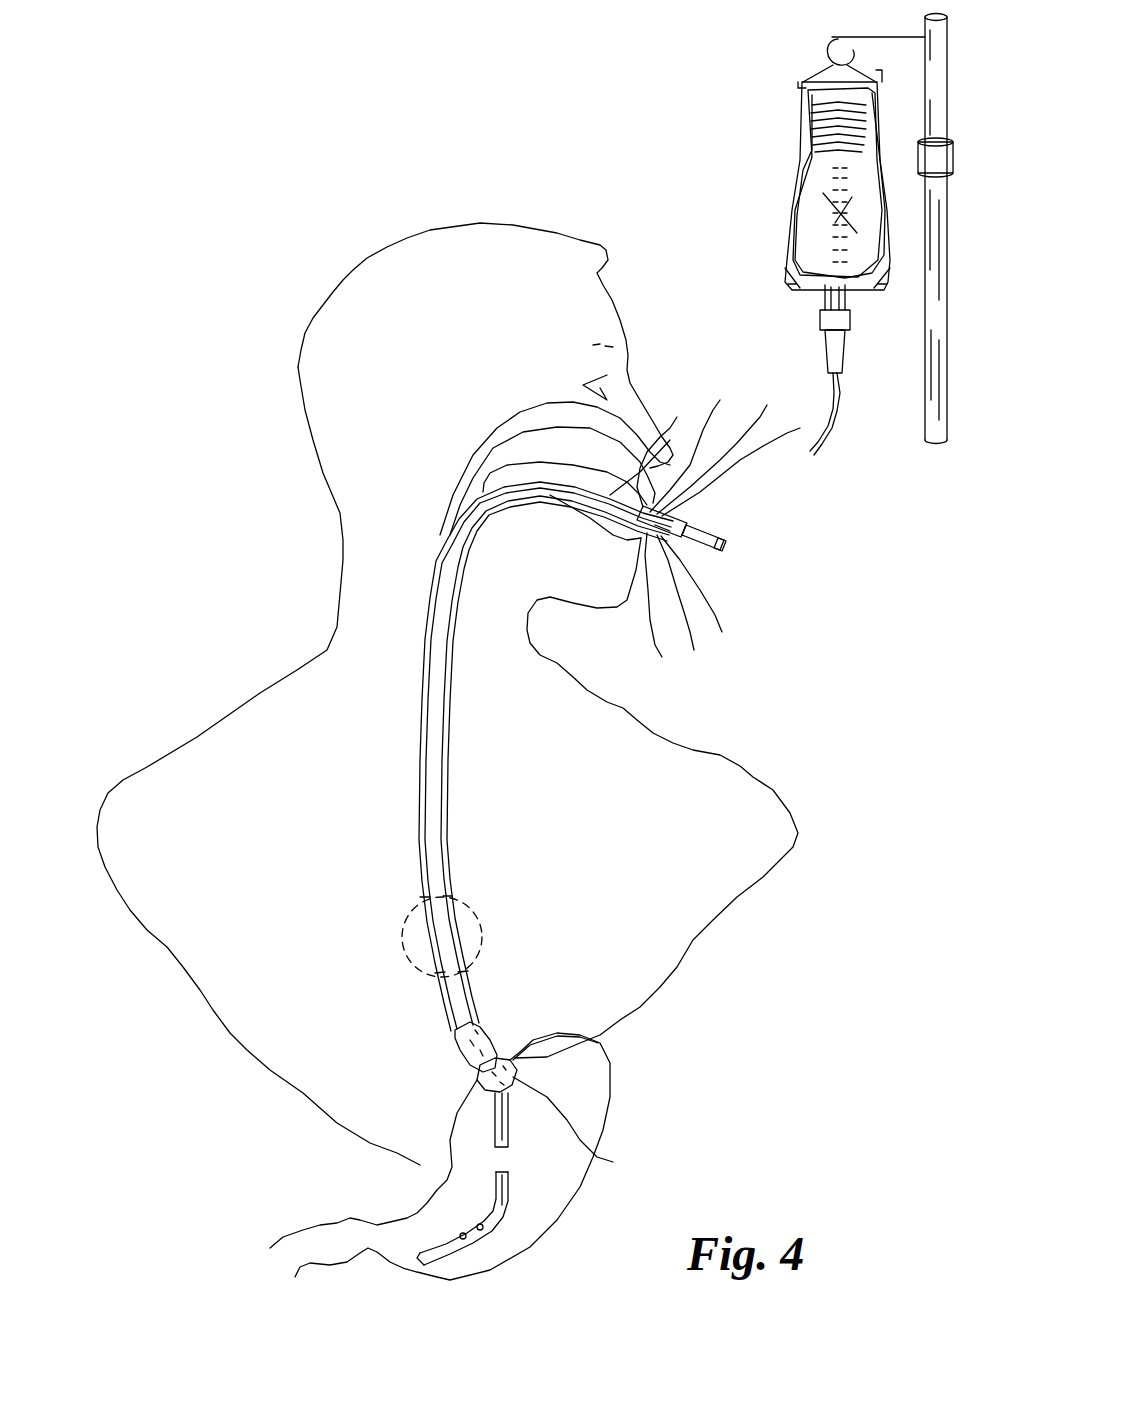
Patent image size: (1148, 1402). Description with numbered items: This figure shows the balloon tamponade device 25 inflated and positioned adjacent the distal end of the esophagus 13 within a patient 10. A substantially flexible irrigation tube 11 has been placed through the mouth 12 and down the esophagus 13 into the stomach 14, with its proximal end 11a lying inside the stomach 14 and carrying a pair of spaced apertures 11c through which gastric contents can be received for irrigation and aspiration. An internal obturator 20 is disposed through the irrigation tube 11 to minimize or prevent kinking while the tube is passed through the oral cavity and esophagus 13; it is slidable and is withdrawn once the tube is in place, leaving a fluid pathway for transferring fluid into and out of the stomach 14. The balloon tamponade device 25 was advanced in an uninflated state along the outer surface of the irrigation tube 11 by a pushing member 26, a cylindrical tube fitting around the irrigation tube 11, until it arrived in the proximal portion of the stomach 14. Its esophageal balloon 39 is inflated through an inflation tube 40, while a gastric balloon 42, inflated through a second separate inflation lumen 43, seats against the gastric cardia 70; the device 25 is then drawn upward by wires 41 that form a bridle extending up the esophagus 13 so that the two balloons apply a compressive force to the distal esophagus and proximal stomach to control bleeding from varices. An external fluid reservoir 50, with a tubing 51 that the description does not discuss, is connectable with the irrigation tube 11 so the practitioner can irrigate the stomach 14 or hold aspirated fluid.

The patient 10 is at (280, 790).
The irrigation tube 11 is at (725, 536).
The proximal end 11a is at (443, 1253).
The spaced apertures 11c is at (487, 1225).
The mouth 12 is at (677, 417).
The esophagus 13 is at (420, 862).
The stomach 14 is at (590, 1117).
The obturator 20 is at (725, 550).
The balloon tamponade device 25 is at (507, 1030).
The pushing member 26 is at (688, 514).
The esophageal balloon 39 is at (477, 1070).
The inflation tube 40 is at (727, 400).
The wires 41 is at (767, 405).
The gastric balloon 42 is at (613, 1162).
The second inflation lumen 43 is at (662, 657).
The external fluid reservoir 50 is at (805, 158).
The feeding supply tube 51 is at (838, 417).
The gastric cardia 70 is at (593, 1040).